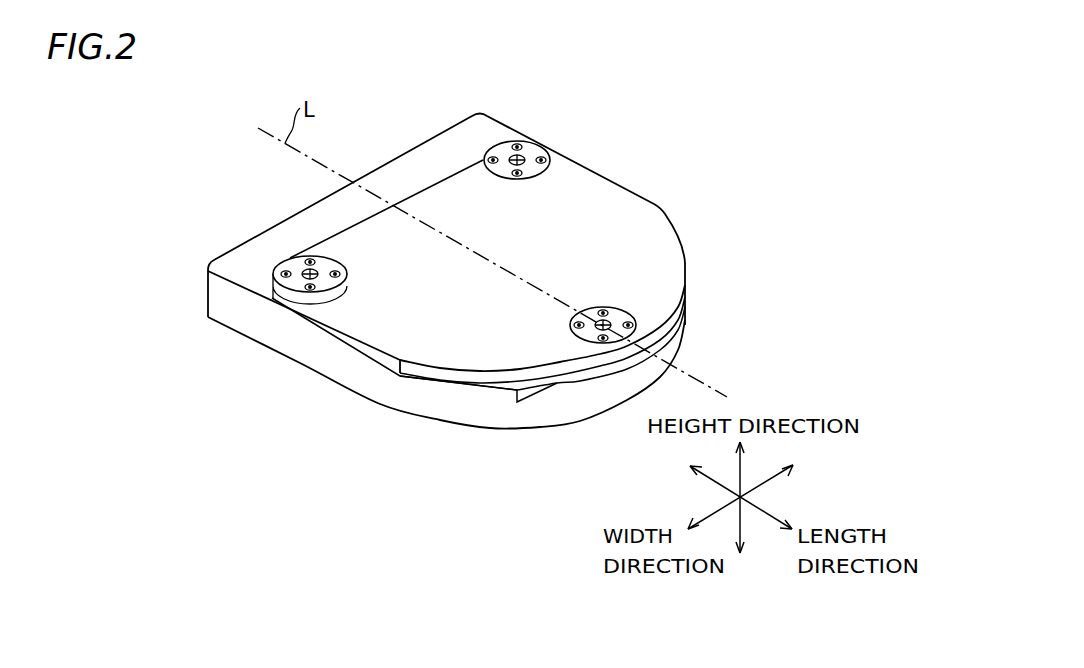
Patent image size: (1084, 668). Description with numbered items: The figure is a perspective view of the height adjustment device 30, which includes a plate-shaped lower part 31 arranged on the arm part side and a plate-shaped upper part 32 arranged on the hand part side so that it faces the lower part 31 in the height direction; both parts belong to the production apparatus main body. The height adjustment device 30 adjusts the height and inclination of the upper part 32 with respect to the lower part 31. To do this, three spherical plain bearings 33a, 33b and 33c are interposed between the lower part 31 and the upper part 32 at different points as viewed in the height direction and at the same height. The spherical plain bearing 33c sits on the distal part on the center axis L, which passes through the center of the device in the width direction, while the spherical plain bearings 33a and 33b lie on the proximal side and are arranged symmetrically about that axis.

The height adjustment device 30 is at (699, 148).
The lower part 31 is at (323, 366).
The upper part 32 is at (601, 200).
The spherical plain bearing 33a is at (310, 274).
The spherical plain bearing 33b is at (517, 158).
The spherical plain bearing 33c is at (603, 325).